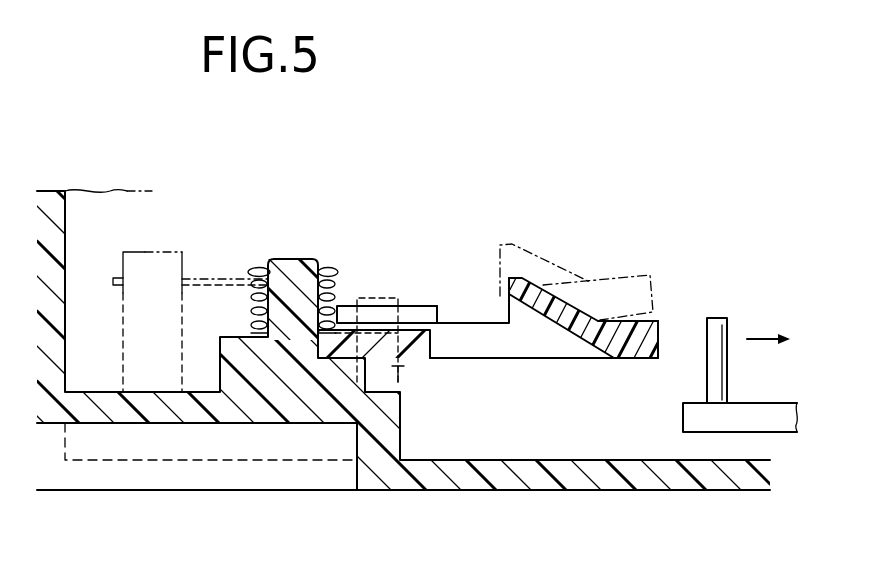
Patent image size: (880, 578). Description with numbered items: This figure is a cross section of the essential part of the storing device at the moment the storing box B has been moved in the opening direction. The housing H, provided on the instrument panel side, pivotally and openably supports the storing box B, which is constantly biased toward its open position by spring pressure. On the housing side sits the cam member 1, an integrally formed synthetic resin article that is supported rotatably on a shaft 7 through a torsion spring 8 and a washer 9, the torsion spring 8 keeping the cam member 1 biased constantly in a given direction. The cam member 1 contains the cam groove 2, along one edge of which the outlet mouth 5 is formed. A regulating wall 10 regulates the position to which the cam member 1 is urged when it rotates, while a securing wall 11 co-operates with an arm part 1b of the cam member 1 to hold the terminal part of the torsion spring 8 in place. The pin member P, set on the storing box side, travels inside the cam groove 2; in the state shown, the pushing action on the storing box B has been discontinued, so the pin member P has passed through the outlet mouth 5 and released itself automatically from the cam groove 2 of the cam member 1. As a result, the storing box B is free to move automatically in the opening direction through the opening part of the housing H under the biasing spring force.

The cam member 1 is at (632, 326).
The arm part 1b is at (407, 303).
The cam groove 2 is at (451, 338).
The outlet mouth 5 is at (508, 309).
The shaft 7 is at (291, 272).
The torsion spring 8 is at (254, 303).
The washer 9 is at (327, 268).
The regulating wall 10 is at (400, 373).
The securing wall 11 is at (147, 273).
The pin member P is at (712, 337).
The storing box B is at (748, 416).
The housing H is at (533, 478).